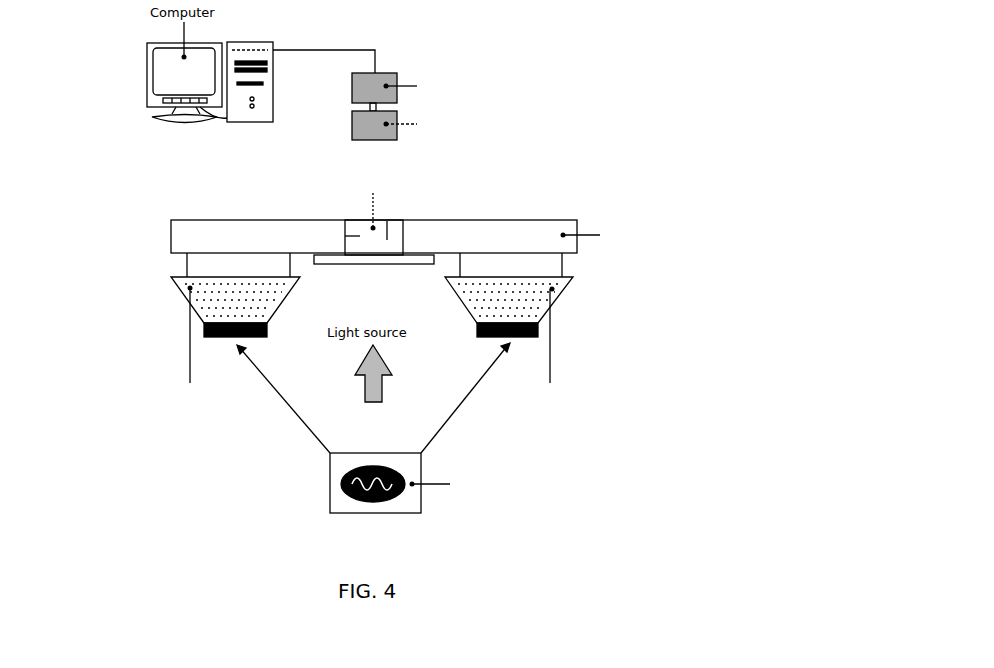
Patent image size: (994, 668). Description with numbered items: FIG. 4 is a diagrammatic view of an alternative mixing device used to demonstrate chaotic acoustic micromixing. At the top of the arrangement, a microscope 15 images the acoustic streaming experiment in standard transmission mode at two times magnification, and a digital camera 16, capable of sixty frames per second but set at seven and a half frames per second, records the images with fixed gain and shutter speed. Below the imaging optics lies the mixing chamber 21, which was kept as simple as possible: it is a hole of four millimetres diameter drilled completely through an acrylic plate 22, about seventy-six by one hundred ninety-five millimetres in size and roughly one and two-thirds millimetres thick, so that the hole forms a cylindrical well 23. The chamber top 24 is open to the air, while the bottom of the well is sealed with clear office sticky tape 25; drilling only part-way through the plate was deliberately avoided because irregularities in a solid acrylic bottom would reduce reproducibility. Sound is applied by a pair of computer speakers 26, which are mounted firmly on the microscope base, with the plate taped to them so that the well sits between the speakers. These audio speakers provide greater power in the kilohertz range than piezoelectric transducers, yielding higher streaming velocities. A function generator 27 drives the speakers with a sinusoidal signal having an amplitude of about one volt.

The microscope 15 is at (352, 130).
The digital camera 16 is at (352, 85).
The mixing chamber 21 is at (390, 238).
The acrylic plate 22 is at (532, 222).
The cylindrical well 23 is at (347, 240).
The chamber top 24 is at (387, 223).
The sticky tape 25 is at (345, 265).
The computer speakers 26 is at (182, 290).
The function generator 27 is at (330, 486).